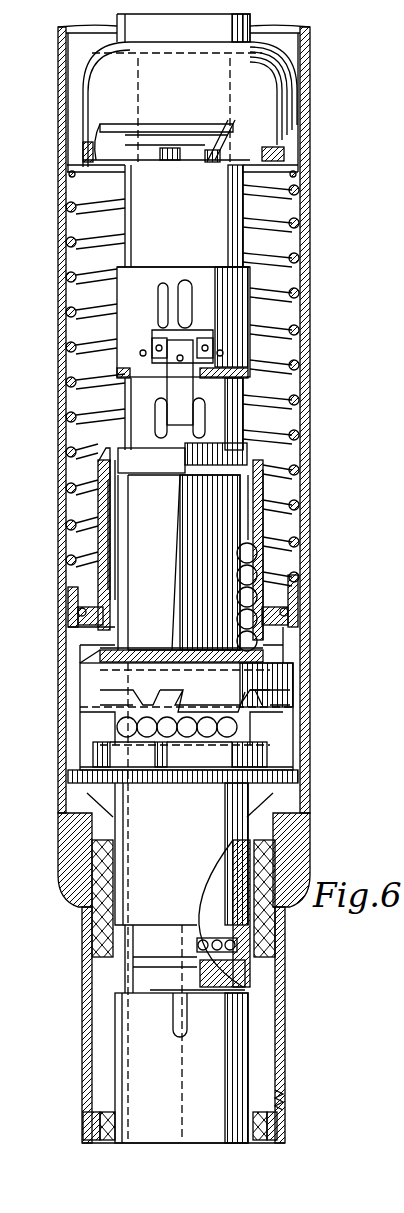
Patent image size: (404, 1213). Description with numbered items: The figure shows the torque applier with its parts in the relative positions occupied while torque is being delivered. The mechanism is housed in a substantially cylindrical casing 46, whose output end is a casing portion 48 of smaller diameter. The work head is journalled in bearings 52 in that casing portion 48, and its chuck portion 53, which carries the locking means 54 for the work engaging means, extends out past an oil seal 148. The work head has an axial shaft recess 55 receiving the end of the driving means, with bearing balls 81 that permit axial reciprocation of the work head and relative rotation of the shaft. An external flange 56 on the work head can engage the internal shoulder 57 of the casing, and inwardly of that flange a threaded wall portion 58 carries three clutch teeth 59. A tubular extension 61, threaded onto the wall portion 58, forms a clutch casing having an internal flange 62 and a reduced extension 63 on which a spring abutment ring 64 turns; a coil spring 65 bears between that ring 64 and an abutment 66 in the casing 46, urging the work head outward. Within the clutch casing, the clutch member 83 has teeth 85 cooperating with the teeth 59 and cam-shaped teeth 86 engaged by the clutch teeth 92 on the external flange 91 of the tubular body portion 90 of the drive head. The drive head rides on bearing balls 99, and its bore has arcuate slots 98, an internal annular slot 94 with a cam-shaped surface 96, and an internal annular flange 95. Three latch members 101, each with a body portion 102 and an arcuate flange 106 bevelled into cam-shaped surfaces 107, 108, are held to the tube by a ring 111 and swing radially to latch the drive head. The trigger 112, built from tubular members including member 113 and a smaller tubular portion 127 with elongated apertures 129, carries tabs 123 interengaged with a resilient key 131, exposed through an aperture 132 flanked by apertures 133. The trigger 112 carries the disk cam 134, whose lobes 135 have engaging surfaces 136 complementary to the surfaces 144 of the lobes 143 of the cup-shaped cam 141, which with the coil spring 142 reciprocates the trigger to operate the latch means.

The cup-shaped cam 141 is at (288, 68).
The coil spring 142 is at (130, 125).
The cam lobe 143 is at (92, 148).
The cam-shaped engaging surface 144 is at (215, 130).
The disk cam 134 is at (285, 155).
The cam lobe 135 is at (190, 160).
The cam-shaped engaging surface 136 is at (232, 170).
The abutment 66 is at (295, 173).
The tubular member 113 is at (70, 226).
The casing 46 is at (310, 246).
The coil spring 65 is at (285, 268).
The trigger 112 is at (118, 292).
The tab 123 is at (163, 322).
The aperture 132 is at (210, 335).
The aperture 133 is at (141, 351).
The resilient tab 131 is at (190, 390).
The elongated aperture 129 is at (157, 410).
The tubular portion 127 is at (120, 417).
The cam-shaped surface 108 is at (110, 440).
The arcuate flange 106 is at (103, 458).
The internal annular flange 95 is at (258, 470).
The cam-shaped surface 107 is at (100, 470).
The cam-shaped surface 96 is at (263, 485).
The internal annular slot 94 is at (263, 500).
The latch member 101 is at (176, 512).
The body portion 102 is at (250, 522).
The arcuate slot 98 is at (112, 552).
The bearing ball 99 is at (260, 565).
The spring abutment ring 64 is at (300, 602).
The extension 63 is at (70, 622).
The internal flange 62 is at (88, 637).
The tubular body portion 90 is at (293, 640).
The external flange 91 is at (285, 662).
The clutch tooth 92 is at (135, 693).
The ring 111 is at (222, 700).
The clutch tooth 86 is at (125, 700).
The tubular extension 61 is at (270, 700).
The clutch member 83 is at (95, 715).
The clutch tooth 59 is at (90, 732).
The clutch tooth 85 is at (115, 752).
The threaded wall portion 58 is at (280, 778).
The external flange 56 is at (82, 790).
The internal shoulder 57 is at (290, 805).
The bearing 52 is at (95, 937).
The bearing ball 81 is at (237, 945).
The shaft recess 55 is at (232, 965).
The casing portion 48 is at (286, 1042).
The locking means 54 is at (118, 1062).
The oil seal 148 is at (272, 1112).
The chuck portion 53 is at (160, 1143).